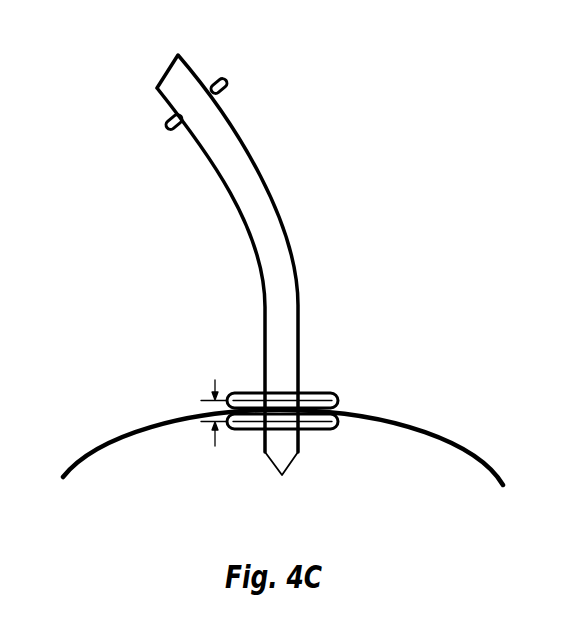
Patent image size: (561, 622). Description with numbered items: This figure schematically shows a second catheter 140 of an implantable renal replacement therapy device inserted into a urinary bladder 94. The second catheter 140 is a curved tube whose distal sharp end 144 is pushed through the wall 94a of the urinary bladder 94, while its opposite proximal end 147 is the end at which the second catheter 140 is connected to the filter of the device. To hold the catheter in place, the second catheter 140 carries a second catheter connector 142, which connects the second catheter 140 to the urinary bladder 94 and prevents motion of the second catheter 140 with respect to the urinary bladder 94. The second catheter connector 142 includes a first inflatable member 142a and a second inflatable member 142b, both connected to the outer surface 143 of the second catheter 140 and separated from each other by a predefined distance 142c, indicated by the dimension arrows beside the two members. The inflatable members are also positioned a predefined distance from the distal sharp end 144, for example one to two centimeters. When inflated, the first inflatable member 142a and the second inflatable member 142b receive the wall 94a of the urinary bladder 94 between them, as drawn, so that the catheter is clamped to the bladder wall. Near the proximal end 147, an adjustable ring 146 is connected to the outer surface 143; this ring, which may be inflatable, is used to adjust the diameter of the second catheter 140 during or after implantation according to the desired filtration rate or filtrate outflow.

The second catheter 140 is at (143, 30).
The outer surface 143 is at (300, 346).
The distal sharp end 144 is at (282, 475).
The adjustable ring 146 is at (228, 85).
The proximal end 147 is at (162, 78).
The second catheter connector 142 is at (388, 355).
The first inflatable member 142a is at (303, 398).
The second inflatable member 142b is at (305, 421).
The predefined distance 142c is at (215, 381).
The urinary bladder 94 is at (337, 497).
The wall 94a is at (100, 445).